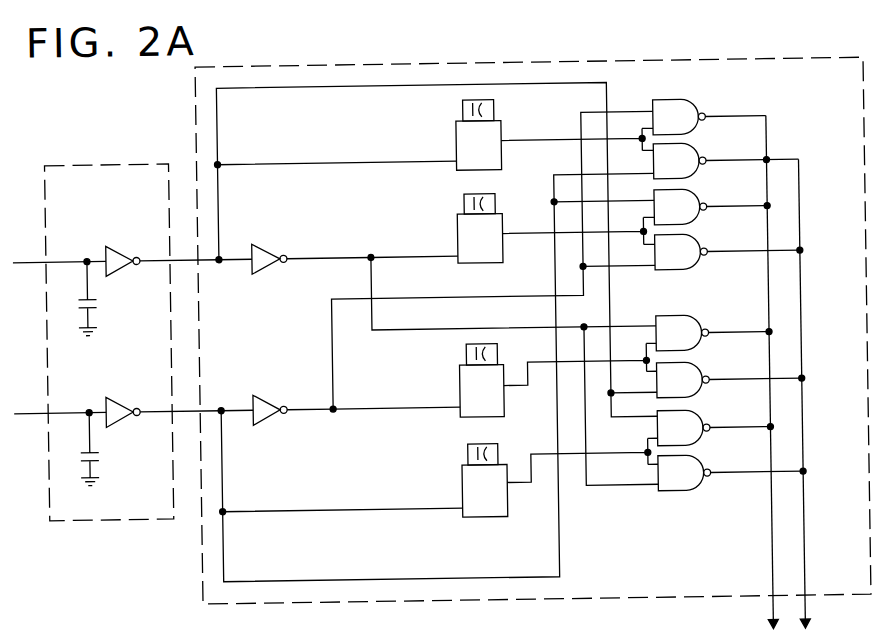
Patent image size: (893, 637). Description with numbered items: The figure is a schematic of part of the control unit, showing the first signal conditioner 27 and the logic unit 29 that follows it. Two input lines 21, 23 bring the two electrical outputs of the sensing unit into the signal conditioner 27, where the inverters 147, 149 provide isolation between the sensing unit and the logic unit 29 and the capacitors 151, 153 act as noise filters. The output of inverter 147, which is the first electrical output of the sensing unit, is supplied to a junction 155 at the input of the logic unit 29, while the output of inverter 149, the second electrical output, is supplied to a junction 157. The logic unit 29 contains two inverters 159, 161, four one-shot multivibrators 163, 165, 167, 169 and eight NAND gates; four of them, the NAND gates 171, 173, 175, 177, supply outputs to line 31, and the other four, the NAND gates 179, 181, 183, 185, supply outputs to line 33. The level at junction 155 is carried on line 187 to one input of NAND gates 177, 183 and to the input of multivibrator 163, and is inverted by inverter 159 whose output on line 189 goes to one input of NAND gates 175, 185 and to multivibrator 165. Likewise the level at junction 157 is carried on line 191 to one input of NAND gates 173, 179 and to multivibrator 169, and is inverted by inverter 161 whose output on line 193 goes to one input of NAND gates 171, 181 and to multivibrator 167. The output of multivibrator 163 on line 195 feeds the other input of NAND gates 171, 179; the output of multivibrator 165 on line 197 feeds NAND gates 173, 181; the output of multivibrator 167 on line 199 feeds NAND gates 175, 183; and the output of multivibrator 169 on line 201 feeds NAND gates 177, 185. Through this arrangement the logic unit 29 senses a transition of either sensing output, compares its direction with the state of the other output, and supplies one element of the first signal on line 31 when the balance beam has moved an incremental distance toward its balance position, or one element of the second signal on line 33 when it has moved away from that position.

The first input signal line 21 is at (41, 233).
The second input signal line 23 is at (29, 407).
The first signal conditioner 27 is at (152, 131).
The logic unit 29 is at (594, 58).
The line 31 is at (769, 562).
The line 33 is at (803, 562).
The inverter 147 is at (110, 240).
The inverter 149 is at (109, 391).
The capacitor 151 is at (97, 300).
The capacitor 153 is at (98, 452).
The junction 155 is at (221, 259).
The junction 157 is at (224, 368).
The inverter 159 is at (278, 243).
The inverter 161 is at (279, 418).
The one-shot multivibrator 163 is at (505, 136).
The one-shot multivibrator 165 is at (497, 262).
The one-shot multivibrator 167 is at (503, 406).
The one-shot multivibrator 169 is at (508, 507).
The NAND gate 171 is at (703, 104).
The NAND gate 173 is at (703, 198).
The NAND gate 175 is at (704, 318).
The NAND gate 177 is at (705, 412).
The NAND gate 179 is at (703, 154).
The NAND gate 181 is at (707, 263).
The NAND gate 183 is at (707, 367).
The NAND gate 185 is at (704, 490).
The line 187 is at (396, 84).
The line 189 is at (448, 226).
The line 191 is at (302, 537).
The line 193 is at (333, 368).
The line 195 is at (577, 132).
The line 197 is at (648, 215).
The line 199 is at (580, 356).
The line 201 is at (643, 451).